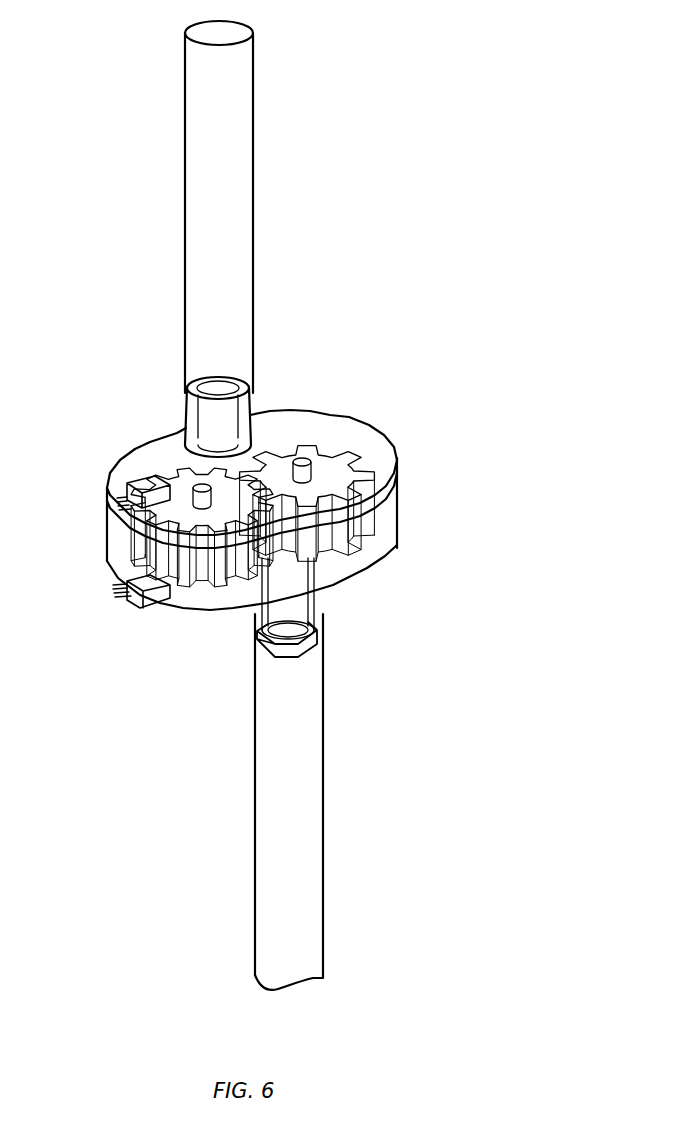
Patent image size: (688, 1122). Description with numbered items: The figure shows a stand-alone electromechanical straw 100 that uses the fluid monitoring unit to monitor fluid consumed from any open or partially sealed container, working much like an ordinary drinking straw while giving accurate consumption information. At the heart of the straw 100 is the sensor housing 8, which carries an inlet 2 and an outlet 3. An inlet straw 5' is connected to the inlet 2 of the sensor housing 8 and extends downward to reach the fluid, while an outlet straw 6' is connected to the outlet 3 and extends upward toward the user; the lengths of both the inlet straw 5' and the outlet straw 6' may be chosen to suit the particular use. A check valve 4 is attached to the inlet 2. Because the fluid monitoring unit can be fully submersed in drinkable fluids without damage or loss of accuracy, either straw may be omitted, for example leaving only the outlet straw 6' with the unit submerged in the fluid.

The electromechanical straw 100 is at (428, 482).
The outlet straw 6' is at (254, 207).
The outlet 3 is at (225, 410).
The inlet 2 is at (320, 598).
The check valve 4 is at (263, 642).
The inlet straw 5' is at (322, 802).
The sensor housing 8 is at (106, 492).